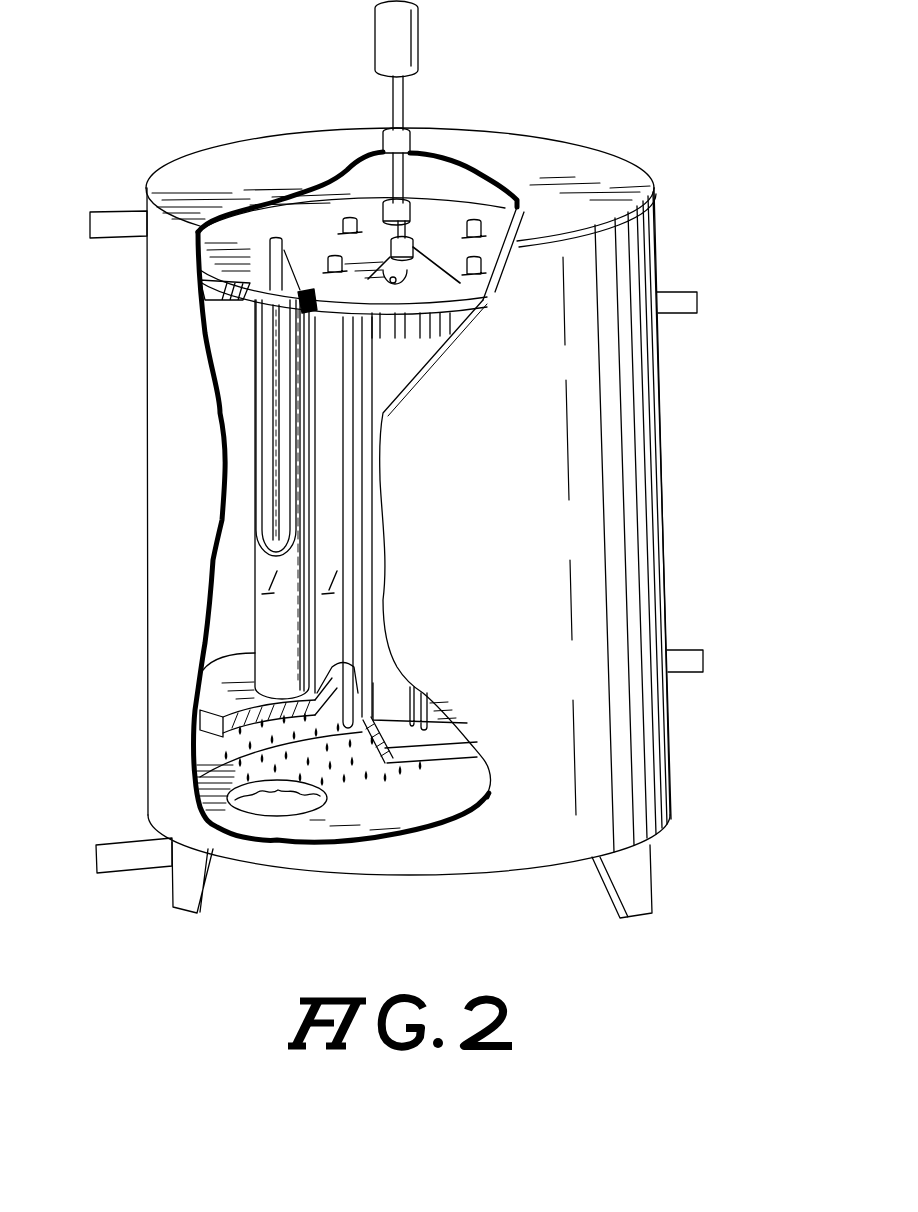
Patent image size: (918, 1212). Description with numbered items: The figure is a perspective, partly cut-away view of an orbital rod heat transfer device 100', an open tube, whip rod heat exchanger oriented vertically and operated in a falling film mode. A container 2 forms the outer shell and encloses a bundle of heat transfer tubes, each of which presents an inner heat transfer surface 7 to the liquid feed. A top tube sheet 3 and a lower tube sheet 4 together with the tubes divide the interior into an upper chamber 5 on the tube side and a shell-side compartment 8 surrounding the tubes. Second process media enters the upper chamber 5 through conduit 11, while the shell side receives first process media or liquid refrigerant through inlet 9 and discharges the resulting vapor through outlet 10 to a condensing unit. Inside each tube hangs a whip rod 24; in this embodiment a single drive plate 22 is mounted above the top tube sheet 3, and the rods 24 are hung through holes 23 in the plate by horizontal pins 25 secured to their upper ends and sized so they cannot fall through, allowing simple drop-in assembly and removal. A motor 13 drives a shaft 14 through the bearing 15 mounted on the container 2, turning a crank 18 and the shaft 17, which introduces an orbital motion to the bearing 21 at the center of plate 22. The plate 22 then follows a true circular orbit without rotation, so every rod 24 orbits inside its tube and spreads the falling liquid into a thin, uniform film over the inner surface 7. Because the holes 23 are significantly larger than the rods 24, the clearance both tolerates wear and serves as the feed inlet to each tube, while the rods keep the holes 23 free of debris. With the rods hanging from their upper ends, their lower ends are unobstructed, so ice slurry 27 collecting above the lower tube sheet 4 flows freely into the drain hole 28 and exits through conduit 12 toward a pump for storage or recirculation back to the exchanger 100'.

The orbital rod heat transfer device 100' is at (638, 70).
The container 2 is at (650, 423).
The top tube sheet 3 is at (202, 305).
The lower tube sheet 4 is at (218, 703).
The upper chamber 5 is at (467, 183).
The inner heat transfer surface 7 is at (263, 407).
The compartment 8 is at (240, 503).
The inlet 9 is at (694, 666).
The outlet 10 is at (683, 294).
The conduit 11 is at (104, 213).
The conduit 12 is at (112, 845).
The motor 13 is at (420, 43).
The shaft 14 is at (410, 83).
The bearing 15 is at (413, 143).
The shaft 17 is at (393, 247).
The crank 18 is at (410, 200).
The bearing 21 is at (413, 247).
The drive plate 22 is at (483, 292).
The holes 23 is at (480, 267).
The whip rod 24 is at (277, 333).
The horizontal pins 25 is at (345, 227).
The ice slurry 27 is at (357, 768).
The drain hole 28 is at (290, 808).